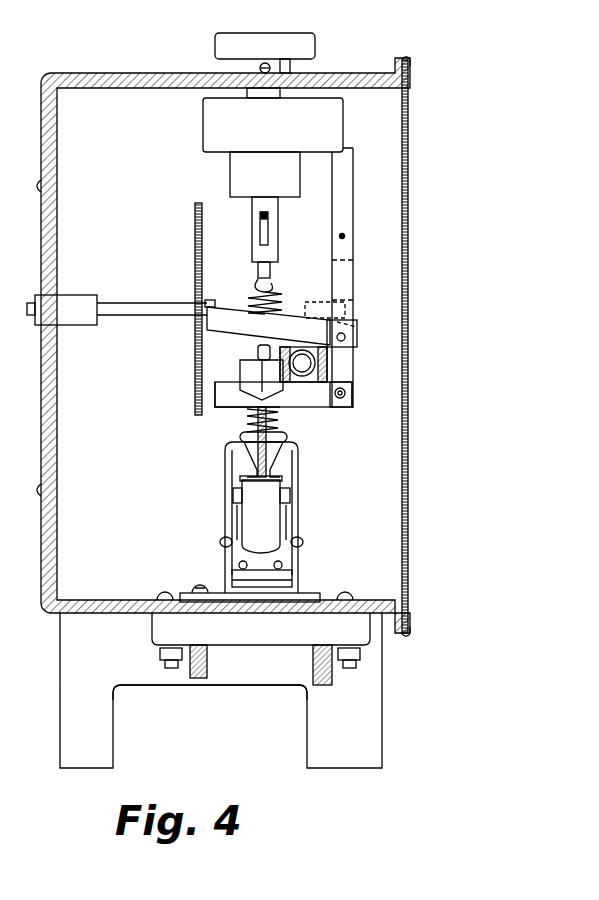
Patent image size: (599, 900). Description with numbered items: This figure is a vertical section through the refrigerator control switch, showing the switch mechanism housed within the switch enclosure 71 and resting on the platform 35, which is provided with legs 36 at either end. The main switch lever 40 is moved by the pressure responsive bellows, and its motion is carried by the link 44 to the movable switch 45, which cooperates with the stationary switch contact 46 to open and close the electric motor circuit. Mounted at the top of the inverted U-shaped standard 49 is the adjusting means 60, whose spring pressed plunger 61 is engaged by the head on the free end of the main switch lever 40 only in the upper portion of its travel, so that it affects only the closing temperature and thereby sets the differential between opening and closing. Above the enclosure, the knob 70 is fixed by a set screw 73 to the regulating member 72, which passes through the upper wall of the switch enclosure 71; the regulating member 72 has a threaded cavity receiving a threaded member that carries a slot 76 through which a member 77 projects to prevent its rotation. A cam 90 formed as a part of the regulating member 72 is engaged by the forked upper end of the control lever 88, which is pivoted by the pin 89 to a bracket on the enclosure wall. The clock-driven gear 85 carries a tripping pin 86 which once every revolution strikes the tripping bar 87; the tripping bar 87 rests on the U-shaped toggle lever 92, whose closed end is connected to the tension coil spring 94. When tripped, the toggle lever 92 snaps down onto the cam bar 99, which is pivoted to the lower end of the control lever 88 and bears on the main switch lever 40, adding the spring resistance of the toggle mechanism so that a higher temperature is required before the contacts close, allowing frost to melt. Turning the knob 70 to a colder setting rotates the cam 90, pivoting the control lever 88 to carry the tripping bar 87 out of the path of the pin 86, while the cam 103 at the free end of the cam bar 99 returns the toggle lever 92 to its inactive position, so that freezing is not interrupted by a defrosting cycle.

The knob 70 is at (308, 47).
The switch enclosure 71 is at (322, 82).
The regulating member 72 is at (238, 166).
The set screw 73 is at (258, 67).
The slot 76 is at (272, 260).
The member 77 is at (268, 216).
The gear 85 is at (195, 223).
The tripping pin 86 is at (212, 300).
The tripping bar 87 is at (228, 334).
The control lever 88 is at (345, 188).
The pin 89 is at (344, 236).
The cam 90 is at (335, 128).
The U-shaped toggle lever 92 is at (330, 366).
The tension coil spring 94 is at (280, 309).
The cam bar 99 is at (334, 409).
The cam 103 is at (234, 396).
The main switch lever 40 is at (280, 421).
The adjusting means 60 is at (245, 436).
The spring pressed plunger 61 is at (257, 353).
The inverted U-shaped standard 49 is at (299, 471).
The link 44 is at (262, 510).
The movable switch 45 is at (280, 585).
The stationary switch contact 46 is at (300, 598).
The platform 35 is at (125, 614).
The legs 36 is at (176, 686).